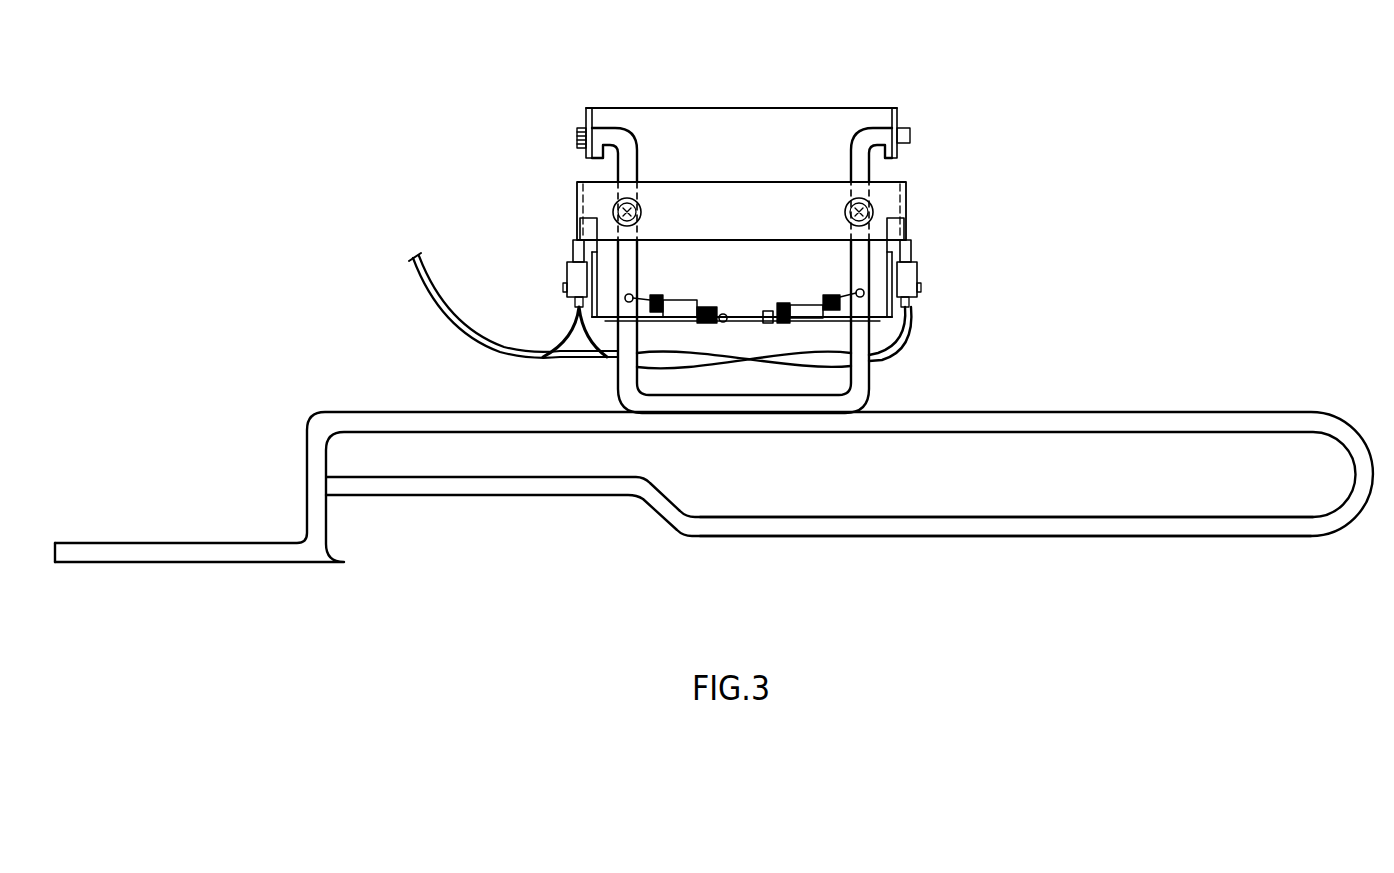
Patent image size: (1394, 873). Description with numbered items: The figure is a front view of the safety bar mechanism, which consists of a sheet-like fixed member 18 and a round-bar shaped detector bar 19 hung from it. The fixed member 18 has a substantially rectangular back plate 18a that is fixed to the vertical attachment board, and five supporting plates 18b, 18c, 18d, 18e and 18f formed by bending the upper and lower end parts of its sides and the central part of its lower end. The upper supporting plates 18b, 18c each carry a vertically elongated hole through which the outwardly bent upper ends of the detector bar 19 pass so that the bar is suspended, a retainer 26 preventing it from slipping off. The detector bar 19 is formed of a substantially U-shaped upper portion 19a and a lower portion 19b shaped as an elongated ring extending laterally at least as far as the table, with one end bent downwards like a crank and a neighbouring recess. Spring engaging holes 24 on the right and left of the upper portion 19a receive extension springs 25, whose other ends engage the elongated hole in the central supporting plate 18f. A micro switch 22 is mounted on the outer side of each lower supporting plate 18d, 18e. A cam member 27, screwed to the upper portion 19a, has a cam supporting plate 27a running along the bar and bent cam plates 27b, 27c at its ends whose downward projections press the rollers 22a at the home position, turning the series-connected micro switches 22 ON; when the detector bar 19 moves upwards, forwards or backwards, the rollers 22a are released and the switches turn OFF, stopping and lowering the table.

The fixed member 18 is at (699, 195).
The back plate 18a is at (691, 123).
The supporting plate 18b is at (584, 114).
The supporting plate 18c is at (898, 108).
The supporting plate 18d is at (573, 314).
The supporting plate 18e is at (907, 312).
The supporting plate 18f is at (745, 312).
The detector bar 19 is at (714, 465).
The upper portion 19a is at (858, 167).
The lower portion 19b is at (847, 528).
The micro switch 22 is at (573, 272).
The roller 22a is at (571, 247).
The spring engaging hole 24 is at (633, 294).
The extension spring 25 is at (700, 308).
The retainer 26 is at (598, 137).
The cam member 27 is at (738, 187).
The cam supporting plate 27a is at (737, 198).
The cam plate 27b is at (575, 224).
The cam plate 27c is at (905, 226).